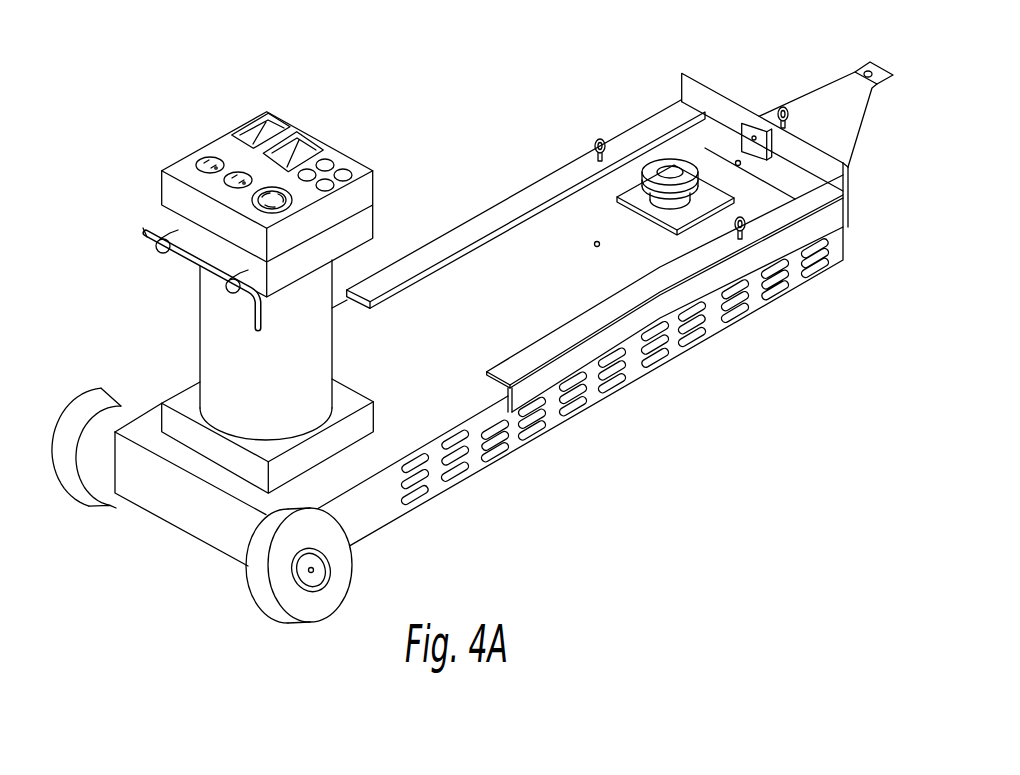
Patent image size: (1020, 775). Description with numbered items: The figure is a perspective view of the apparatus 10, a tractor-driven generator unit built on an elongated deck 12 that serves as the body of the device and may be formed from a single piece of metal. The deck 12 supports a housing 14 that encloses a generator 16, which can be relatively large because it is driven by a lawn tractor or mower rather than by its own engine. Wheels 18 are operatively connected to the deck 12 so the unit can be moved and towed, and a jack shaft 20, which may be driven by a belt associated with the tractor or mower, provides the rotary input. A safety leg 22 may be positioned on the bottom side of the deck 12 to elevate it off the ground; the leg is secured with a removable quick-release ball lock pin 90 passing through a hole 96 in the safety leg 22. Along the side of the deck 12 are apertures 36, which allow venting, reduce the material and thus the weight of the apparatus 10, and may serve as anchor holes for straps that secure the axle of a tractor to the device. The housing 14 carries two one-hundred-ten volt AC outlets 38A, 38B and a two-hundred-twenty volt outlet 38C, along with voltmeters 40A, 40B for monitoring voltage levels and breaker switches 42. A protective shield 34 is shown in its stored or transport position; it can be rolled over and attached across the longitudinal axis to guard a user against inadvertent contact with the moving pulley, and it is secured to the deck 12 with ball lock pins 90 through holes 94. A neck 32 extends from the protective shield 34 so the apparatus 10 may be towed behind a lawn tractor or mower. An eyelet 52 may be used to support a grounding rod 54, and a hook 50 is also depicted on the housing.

The apparatus 10 is at (663, 51).
The deck 12 is at (529, 167).
The housing 14 is at (360, 167).
The generator 16 is at (332, 336).
The wheels 18 is at (100, 400).
The jack shaft 20 is at (660, 168).
The safety leg 22 is at (770, 128).
The neck 32 is at (835, 88).
The protective shield 34 is at (500, 215).
The apertures 36 is at (492, 445).
The 110V AC outlet 38A is at (204, 160).
The 110V AC outlet 38B is at (236, 172).
The 220VAC outlet 38C is at (292, 196).
The voltmeter 40A is at (267, 126).
The voltmeter 40B is at (297, 143).
The breaker switches 42 is at (332, 160).
The cable hook 50 is at (156, 250).
The eyelet 52 is at (226, 292).
The grounding rod 54 is at (260, 320).
The ball lock pin 90 is at (597, 140).
The holes 94 is at (737, 160).
The hole 96 is at (756, 141).